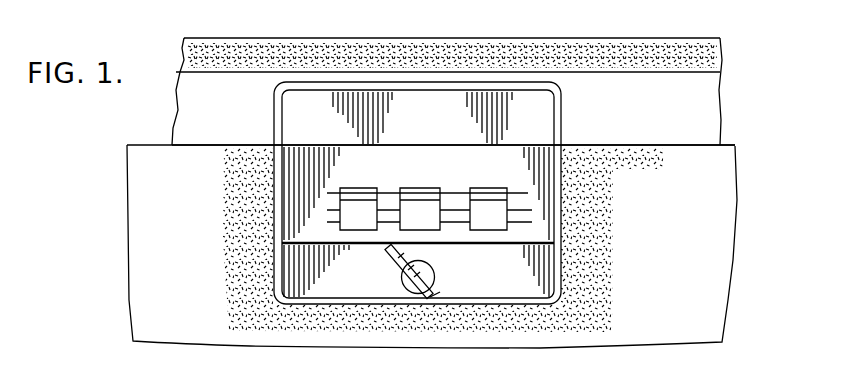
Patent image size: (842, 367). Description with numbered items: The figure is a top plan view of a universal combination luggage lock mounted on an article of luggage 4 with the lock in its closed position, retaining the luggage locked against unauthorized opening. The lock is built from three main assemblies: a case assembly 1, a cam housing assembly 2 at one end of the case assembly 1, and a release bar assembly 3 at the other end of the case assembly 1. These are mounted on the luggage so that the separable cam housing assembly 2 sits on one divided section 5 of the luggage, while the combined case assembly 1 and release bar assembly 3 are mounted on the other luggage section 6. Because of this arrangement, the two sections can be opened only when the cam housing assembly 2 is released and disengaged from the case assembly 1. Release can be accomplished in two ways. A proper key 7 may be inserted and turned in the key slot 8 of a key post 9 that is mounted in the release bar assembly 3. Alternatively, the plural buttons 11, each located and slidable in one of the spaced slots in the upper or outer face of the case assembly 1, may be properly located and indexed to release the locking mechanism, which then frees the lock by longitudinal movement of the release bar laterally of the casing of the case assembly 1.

The case assembly 1 is at (598, 185).
The cam housing assembly 2 is at (566, 124).
The release bar assembly 3 is at (597, 262).
The article of luggage 4 is at (631, 40).
The divided section 5 is at (667, 120).
The luggage section 6 is at (691, 237).
The key 7 is at (437, 297).
The key slot 8 is at (410, 278).
The key post 9 is at (436, 270).
The buttons 11 is at (415, 190).